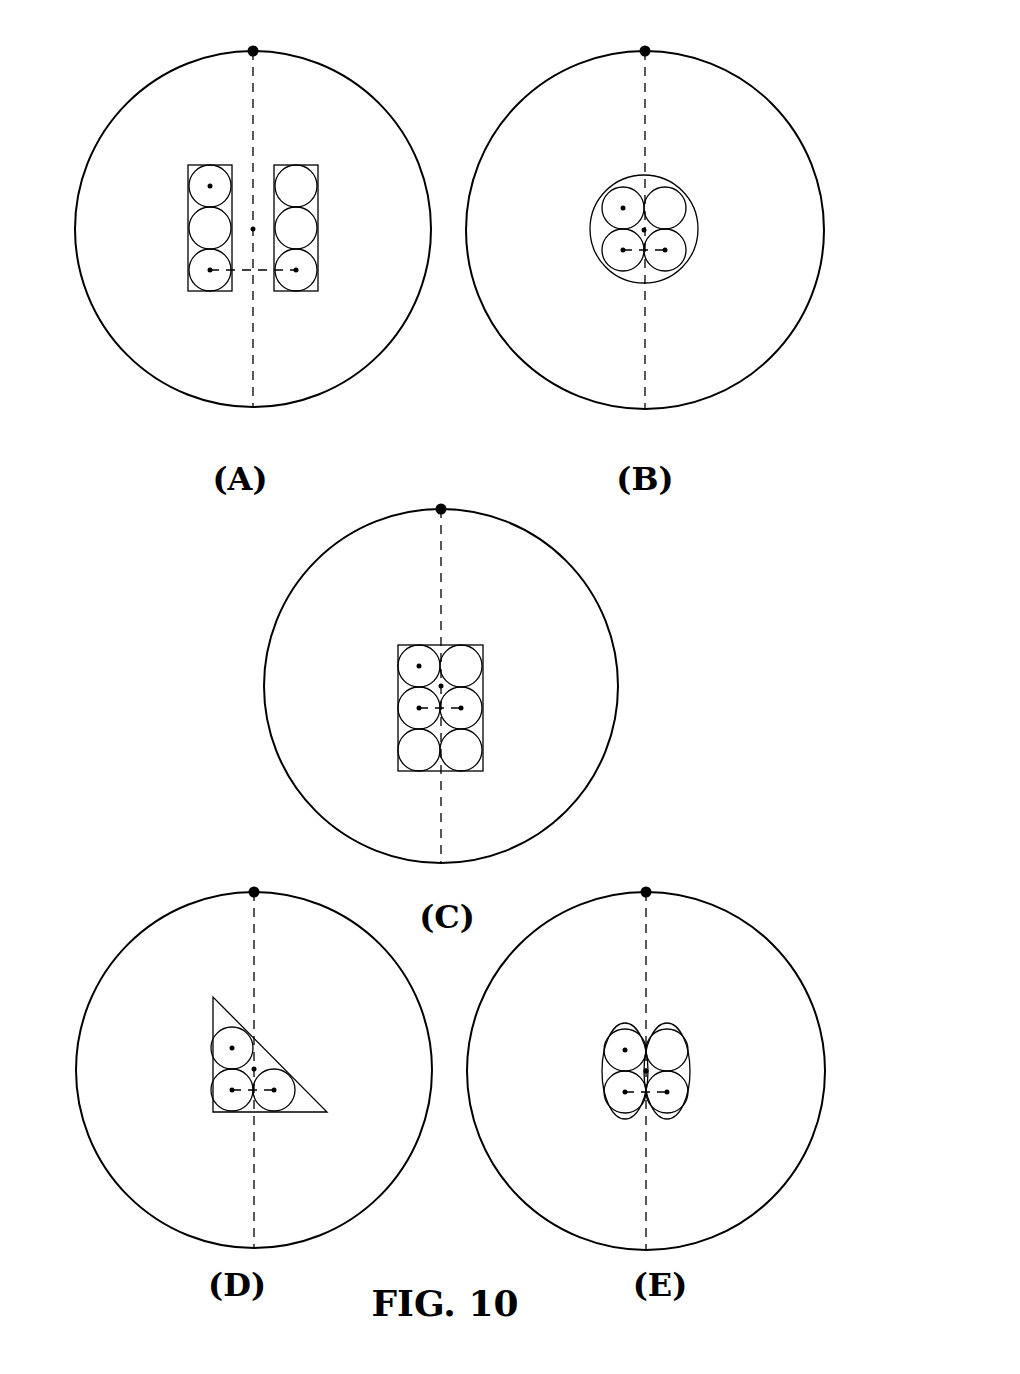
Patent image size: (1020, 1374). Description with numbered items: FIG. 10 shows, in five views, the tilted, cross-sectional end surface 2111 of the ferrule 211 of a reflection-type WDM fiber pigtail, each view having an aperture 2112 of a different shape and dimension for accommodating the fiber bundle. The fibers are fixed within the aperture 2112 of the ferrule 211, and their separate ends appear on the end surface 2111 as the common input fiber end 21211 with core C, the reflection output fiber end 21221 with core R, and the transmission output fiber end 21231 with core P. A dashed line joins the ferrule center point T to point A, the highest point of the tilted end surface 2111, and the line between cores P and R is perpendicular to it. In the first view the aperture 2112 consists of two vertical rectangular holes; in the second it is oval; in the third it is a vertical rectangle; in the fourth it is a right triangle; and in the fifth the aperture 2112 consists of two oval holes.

The ferrule 211 is at (362, 88).
The tilted, cross-sectional end surface 2111 is at (110, 278).
The aperture 2112 is at (200, 165).
The common input fiber end 21211 is at (195, 193).
The reflection output fiber end 21221 is at (297, 292).
The transmission output fiber end 21231 is at (207, 288).